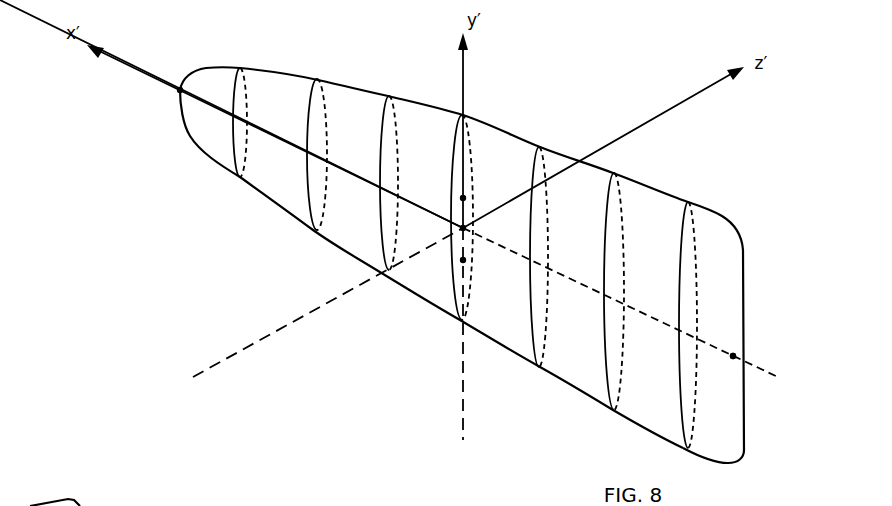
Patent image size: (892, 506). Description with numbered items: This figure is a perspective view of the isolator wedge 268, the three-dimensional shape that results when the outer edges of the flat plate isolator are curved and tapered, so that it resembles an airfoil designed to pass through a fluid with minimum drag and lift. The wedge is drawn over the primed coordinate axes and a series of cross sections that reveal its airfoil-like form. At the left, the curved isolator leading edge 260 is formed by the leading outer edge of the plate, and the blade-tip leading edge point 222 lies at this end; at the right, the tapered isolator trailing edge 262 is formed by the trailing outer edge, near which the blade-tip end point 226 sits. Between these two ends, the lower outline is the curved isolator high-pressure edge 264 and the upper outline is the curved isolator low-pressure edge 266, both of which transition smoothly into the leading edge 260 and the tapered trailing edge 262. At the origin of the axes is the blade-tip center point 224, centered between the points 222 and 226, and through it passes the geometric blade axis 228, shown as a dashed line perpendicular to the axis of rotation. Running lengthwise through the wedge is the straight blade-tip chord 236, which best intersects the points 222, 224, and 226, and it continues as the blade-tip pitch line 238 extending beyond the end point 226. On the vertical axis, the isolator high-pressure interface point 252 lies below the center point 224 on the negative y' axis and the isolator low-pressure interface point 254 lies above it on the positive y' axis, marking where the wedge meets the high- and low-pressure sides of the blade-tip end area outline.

The blade-tip leading edge point 222 is at (175, 91).
The blade-tip center point 224 is at (468, 227).
The blade-tip end point 226 is at (733, 360).
The geometric blade axis 228 is at (227, 358).
The blade-tip chord 236 is at (668, 318).
The blade-tip pitch line 238 is at (753, 360).
The isolator high-pressure interface point 252 is at (464, 262).
The isolator low-pressure interface point 254 is at (464, 196).
The isolator leading edge 260 is at (200, 68).
The isolator trailing edge 262 is at (747, 298).
The isolator high-pressure edge 264 is at (413, 292).
The isolator low-pressure edge 266 is at (507, 127).
The isolator wedge 268 is at (263, 95).